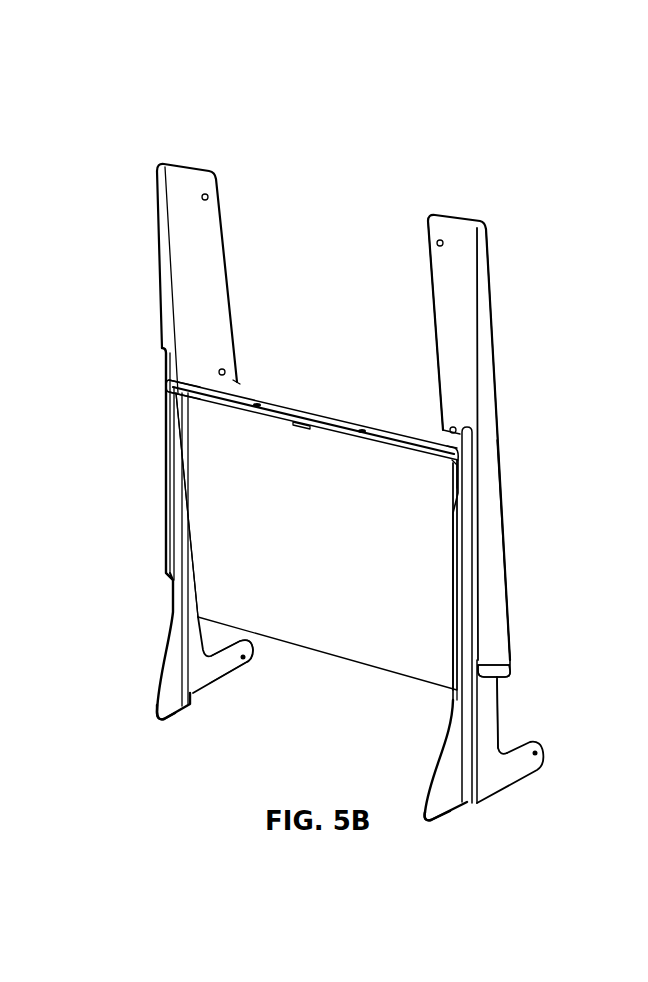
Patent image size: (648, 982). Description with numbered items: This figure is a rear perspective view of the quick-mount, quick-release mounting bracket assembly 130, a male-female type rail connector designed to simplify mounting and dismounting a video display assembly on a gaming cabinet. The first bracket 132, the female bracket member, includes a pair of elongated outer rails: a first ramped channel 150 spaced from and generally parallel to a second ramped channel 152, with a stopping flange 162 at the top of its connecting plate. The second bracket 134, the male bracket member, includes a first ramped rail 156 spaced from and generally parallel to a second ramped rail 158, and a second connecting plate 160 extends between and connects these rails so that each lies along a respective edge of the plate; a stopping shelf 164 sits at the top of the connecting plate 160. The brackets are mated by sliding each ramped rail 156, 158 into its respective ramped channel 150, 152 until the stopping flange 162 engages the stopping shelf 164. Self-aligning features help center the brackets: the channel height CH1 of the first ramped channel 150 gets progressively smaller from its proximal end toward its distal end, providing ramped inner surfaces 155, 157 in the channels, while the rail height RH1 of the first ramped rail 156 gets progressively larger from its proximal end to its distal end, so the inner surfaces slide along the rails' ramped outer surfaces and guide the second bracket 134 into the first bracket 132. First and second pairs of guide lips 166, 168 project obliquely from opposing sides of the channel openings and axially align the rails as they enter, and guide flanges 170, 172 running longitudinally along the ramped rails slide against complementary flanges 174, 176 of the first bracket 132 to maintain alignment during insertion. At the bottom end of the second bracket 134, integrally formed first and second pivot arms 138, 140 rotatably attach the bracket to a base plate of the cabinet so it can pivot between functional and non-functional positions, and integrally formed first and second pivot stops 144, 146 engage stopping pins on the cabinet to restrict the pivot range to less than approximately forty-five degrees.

The mounting bracket assembly 130 is at (162, 118).
The first bracket 132 is at (492, 297).
The second bracket 134 is at (161, 648).
The first pivot arm 138 is at (530, 768).
The second pivot arm 140 is at (245, 662).
The first pivot stop 144 is at (423, 813).
The second pivot stop 146 is at (150, 712).
The first ramped channel 150 is at (493, 453).
The second ramped channel 152 is at (162, 321).
The ramped inner surface 155 is at (448, 367).
The first ramped rail 156 is at (455, 678).
The ramped inner surface 157 is at (191, 296).
The second ramped rail 158 is at (193, 599).
The second connecting plate 160 is at (327, 632).
The stopping flange 162 is at (323, 420).
The stopping shelf 164 is at (198, 386).
The first pair of guide lips 166 is at (508, 662).
The second pair of guide lips 168 is at (168, 577).
The guide flange 170 is at (463, 522).
The guide flange 172 is at (181, 464).
The complementary flange 174 is at (457, 487).
The complementary flange 176 is at (170, 430).
The channel height CH1 is at (502, 507).
The rail height RH1 is at (498, 693).